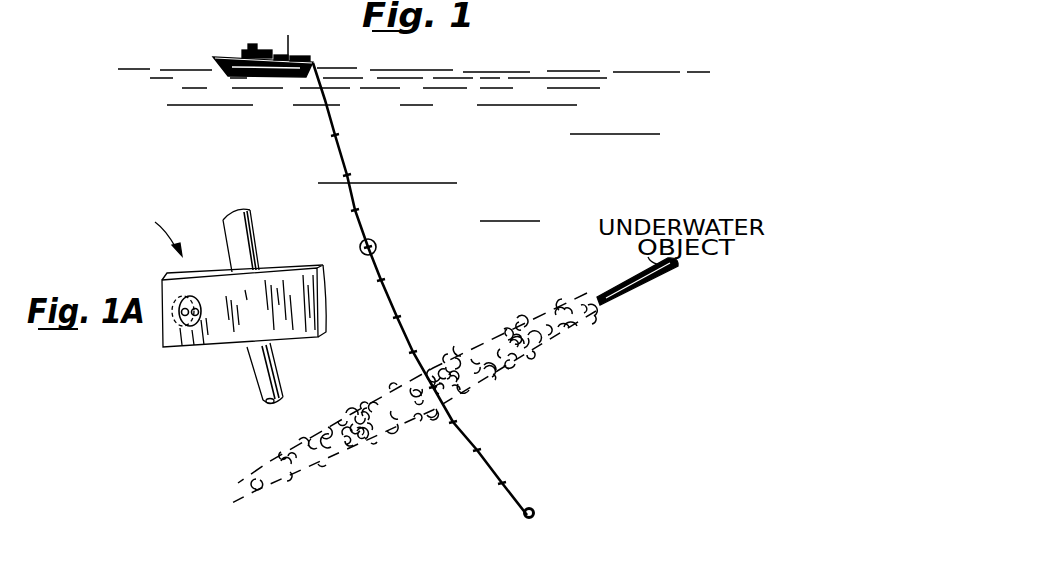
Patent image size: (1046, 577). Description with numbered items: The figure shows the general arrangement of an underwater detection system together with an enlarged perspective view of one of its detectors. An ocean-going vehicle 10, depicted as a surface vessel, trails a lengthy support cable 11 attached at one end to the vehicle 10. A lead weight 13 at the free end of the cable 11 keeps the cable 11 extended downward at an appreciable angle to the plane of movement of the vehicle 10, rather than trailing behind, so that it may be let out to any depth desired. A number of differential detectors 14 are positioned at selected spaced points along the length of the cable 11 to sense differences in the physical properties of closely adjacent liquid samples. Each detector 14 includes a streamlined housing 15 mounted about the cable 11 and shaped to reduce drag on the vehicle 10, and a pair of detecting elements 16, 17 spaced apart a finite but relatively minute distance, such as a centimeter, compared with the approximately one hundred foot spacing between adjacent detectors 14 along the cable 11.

In FIG. 1, the ocean-going vehicle 10 is at (238, 58).
In FIG. 1, the support cable 11 is at (337, 152).
In FIG. 1A, the support cable 11 is at (255, 389).
In FIG. 1, the lead weight 13 is at (531, 509).
In FIG. 1, the differential detector 14 is at (372, 240).
In FIG. 1A, the differential detector 14 is at (198, 304).
In FIG. 1A, the streamlined housing 15 is at (318, 322).
In FIG. 1A, the detecting element 16 is at (187, 324).
In FIG. 1A, the detecting element 17 is at (176, 299).